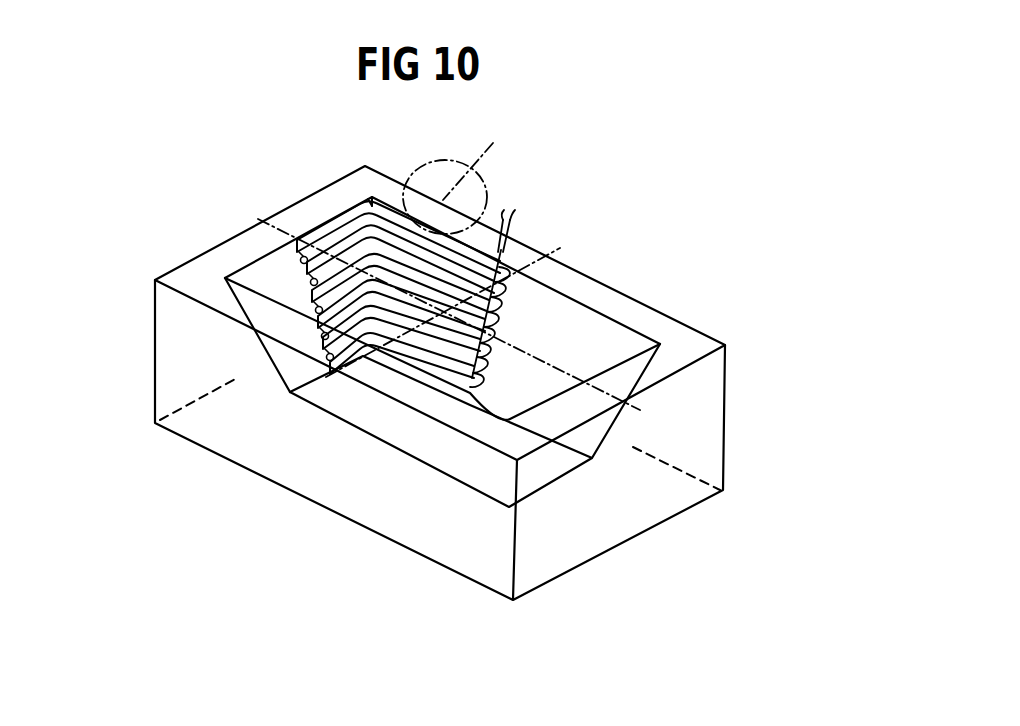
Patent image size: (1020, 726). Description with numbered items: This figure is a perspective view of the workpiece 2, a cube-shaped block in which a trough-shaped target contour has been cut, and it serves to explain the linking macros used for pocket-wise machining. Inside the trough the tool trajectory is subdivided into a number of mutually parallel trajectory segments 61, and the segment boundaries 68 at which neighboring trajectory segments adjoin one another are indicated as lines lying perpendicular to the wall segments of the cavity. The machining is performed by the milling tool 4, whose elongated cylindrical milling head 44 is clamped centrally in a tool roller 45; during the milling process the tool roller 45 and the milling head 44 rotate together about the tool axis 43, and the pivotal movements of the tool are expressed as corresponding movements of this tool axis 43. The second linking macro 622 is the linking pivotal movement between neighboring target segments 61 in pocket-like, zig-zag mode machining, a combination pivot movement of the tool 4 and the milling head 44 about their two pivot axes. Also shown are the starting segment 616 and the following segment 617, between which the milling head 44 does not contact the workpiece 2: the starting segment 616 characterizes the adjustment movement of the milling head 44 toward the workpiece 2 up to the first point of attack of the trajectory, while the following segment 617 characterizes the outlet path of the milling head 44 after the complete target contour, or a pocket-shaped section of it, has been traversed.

The workpiece 2 is at (135, 320).
The milling tool 4 is at (407, 163).
The tool axis 43 is at (477, 166).
The milling head 44 is at (262, 340).
The tool roller 45 is at (385, 192).
The trajectory segments 61 is at (500, 290).
The segment boundaries 68 is at (262, 221).
The starting segment 616 is at (513, 224).
The following segment 617 is at (500, 222).
The second linking macro 622 is at (297, 250).